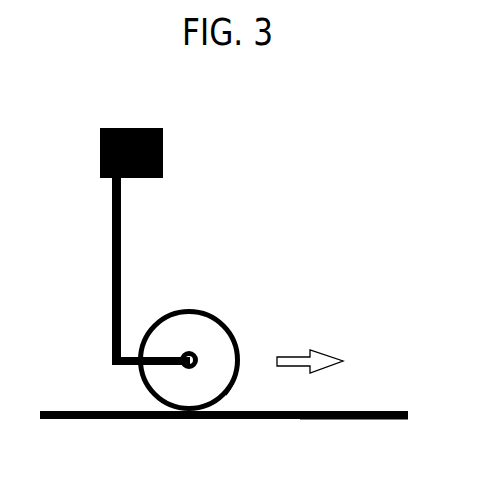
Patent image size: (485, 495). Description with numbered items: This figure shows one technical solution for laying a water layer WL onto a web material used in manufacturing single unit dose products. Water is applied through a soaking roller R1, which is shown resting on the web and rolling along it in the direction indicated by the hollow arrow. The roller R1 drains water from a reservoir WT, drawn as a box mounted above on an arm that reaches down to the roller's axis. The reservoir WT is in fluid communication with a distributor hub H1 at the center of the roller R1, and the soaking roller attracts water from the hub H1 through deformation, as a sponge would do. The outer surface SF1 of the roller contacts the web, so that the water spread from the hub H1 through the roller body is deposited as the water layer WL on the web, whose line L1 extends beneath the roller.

The reservoir WT is at (163, 150).
The soaking roller R1 is at (235, 322).
The distributor hub H1 is at (196, 352).
The wheel outer surface SF1 is at (240, 375).
The water layer WL is at (383, 410).
The ground line L1 is at (349, 420).